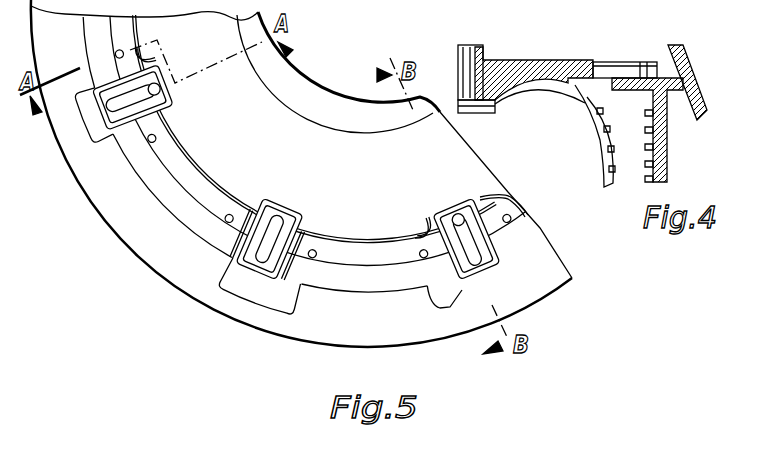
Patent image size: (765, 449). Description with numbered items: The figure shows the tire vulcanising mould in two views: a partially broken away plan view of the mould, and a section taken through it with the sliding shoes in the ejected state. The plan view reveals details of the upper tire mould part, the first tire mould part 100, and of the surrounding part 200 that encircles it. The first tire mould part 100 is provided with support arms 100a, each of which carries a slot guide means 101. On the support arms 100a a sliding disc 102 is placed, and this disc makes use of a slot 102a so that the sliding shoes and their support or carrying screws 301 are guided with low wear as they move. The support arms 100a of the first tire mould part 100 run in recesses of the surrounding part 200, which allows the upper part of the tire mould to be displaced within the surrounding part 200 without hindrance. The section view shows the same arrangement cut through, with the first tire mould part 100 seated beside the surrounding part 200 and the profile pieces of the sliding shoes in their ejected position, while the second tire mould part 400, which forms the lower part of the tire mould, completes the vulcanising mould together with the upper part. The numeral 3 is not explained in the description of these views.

In FIG. 5, the first tire mould part 100 is at (288, 168).
In FIG. 4, the first tire mould part 100 is at (553, 67).
In FIG. 5, the support arms 100a is at (250, 262).
In FIG. 5, the slot guide means 101 is at (265, 258).
In FIG. 5, the sliding disc 102 is at (110, 136).
In FIG. 5, the slot 102a is at (110, 108).
In FIG. 5, the surrounding part 200 is at (370, 333).
In FIG. 4, the surrounding part 200 is at (689, 60).
In FIG. 5, the support or carrying screws 301 is at (161, 91).
In FIG. 4, the curved arm 3 is at (596, 150).
In FIG. 4, the second tire mould part 400 is at (592, 93).